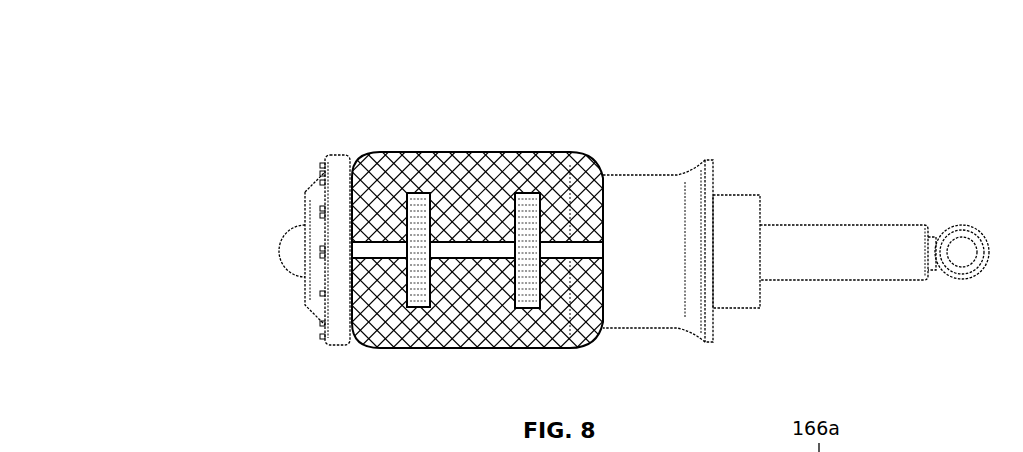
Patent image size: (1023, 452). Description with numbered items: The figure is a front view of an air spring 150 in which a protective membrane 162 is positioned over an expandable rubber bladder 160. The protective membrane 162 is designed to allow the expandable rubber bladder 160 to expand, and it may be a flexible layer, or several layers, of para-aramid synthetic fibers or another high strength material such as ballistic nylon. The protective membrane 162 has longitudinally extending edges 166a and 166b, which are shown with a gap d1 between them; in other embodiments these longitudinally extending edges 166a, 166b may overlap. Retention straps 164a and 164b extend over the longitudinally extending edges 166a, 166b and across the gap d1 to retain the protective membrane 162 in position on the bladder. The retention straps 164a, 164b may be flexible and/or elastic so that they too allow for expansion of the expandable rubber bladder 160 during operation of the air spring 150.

The air spring 150 is at (640, 104).
The expandable rubber bladder 160 is at (473, 244).
The protective membrane 162 is at (470, 178).
The retention strap 164a is at (528, 298).
The retention strap 164b is at (416, 298).
The longitudinally extending edge 166a is at (458, 246).
The longitudinally extending edge 166b is at (478, 256).
The gap d1 is at (368, 249).